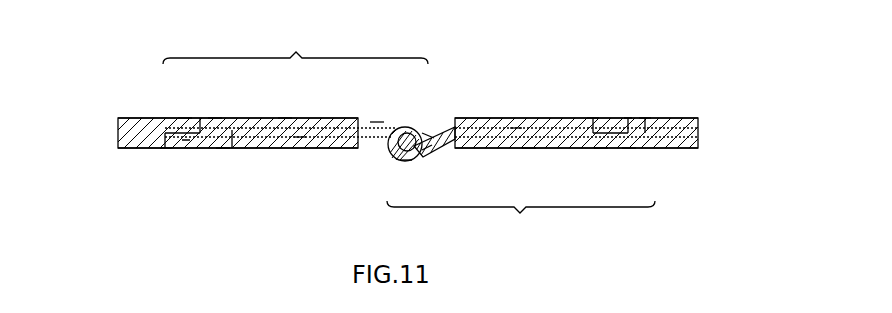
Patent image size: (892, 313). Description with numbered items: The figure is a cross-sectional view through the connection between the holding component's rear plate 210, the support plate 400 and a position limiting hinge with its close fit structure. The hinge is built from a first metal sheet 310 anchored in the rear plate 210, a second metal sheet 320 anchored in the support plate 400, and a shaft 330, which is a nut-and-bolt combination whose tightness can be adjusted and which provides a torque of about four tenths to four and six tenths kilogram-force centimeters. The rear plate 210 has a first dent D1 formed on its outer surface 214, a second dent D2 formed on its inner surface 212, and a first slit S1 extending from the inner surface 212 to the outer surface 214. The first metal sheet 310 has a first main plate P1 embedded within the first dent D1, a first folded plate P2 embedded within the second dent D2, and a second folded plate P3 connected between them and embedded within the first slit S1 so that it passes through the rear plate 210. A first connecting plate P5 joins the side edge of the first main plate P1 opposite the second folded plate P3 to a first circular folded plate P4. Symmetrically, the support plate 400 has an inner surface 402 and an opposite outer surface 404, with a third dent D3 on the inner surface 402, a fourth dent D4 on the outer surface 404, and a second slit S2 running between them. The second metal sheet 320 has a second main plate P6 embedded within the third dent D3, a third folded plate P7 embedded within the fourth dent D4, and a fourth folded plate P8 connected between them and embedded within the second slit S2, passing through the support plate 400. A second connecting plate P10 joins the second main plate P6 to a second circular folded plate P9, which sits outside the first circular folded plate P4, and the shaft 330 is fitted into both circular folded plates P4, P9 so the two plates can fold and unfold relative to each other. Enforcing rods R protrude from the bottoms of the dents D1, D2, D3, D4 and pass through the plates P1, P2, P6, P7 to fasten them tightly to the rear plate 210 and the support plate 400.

The support plate 400 is at (120, 131).
The inner surface 402 is at (137, 116).
The outer surface 404 is at (138, 150).
The rear plate 210 is at (698, 131).
The inner surface 212 is at (679, 117).
The outer surface 214 is at (679, 150).
The first metal sheet 310 is at (521, 224).
The second metal sheet 320 is at (295, 44).
The shaft 330 is at (393, 156).
The first main plate P1 is at (528, 150).
The first folded plate P2 is at (628, 150).
The second folded plate P3 is at (600, 150).
The first circular folded plate P4 is at (407, 160).
The first connecting plate P5 is at (427, 148).
The second main plate P6 is at (284, 118).
The third folded plate P7 is at (184, 118).
The fourth folded plate P8 is at (215, 118).
The second circular folded plate P9 is at (428, 135).
The second connecting plate P10 is at (378, 122).
The first dent D1 is at (516, 125).
The second dent D2 is at (646, 117).
The third dent D3 is at (301, 140).
The fourth dent D4 is at (166, 150).
The first slit S1 is at (593, 117).
The second slit S2 is at (223, 150).
The enforcing rod R is at (186, 150).